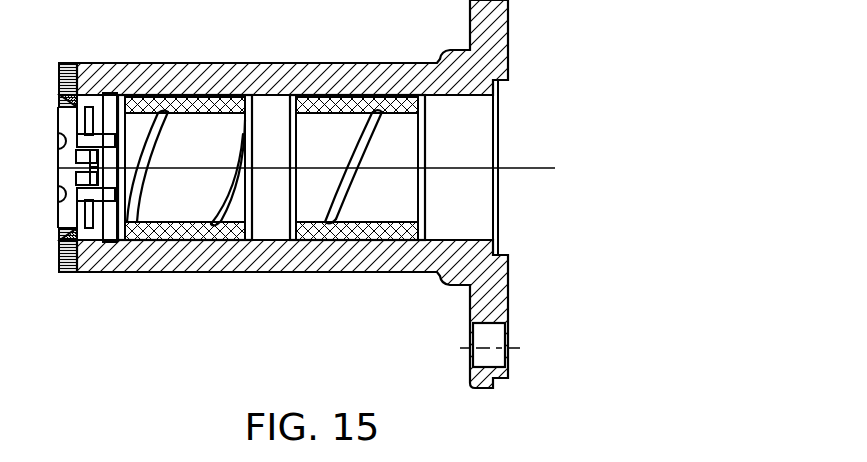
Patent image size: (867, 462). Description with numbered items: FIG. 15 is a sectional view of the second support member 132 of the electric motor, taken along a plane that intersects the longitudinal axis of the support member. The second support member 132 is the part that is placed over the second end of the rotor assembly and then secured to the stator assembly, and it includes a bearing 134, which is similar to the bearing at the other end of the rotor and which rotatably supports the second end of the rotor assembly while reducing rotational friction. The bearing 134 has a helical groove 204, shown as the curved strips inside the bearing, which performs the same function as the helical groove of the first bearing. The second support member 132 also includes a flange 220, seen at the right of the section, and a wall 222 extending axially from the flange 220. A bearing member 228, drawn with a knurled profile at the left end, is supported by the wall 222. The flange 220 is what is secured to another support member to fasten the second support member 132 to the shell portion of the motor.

The bearing member 228 is at (64, 68).
The second support member 132 is at (207, 94).
The bearing 134 is at (330, 103).
The flange 220 is at (490, 28).
The wall 222 is at (172, 254).
The helical groove 204 is at (342, 200).